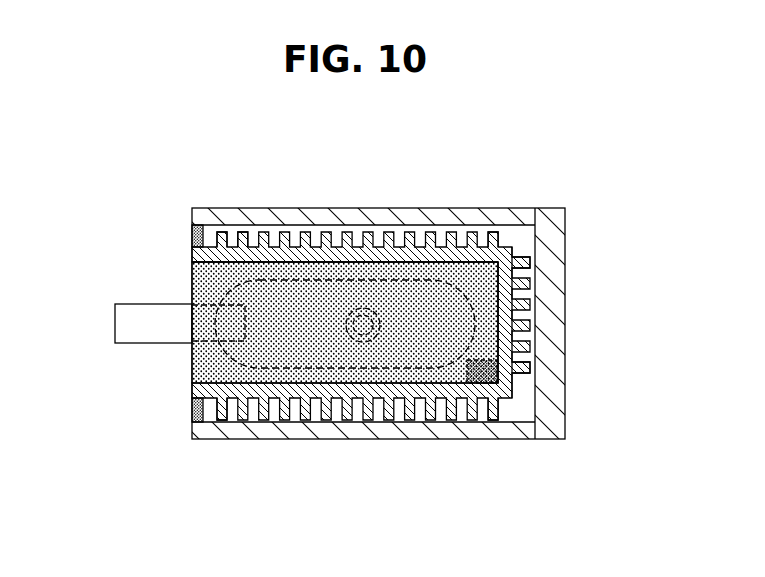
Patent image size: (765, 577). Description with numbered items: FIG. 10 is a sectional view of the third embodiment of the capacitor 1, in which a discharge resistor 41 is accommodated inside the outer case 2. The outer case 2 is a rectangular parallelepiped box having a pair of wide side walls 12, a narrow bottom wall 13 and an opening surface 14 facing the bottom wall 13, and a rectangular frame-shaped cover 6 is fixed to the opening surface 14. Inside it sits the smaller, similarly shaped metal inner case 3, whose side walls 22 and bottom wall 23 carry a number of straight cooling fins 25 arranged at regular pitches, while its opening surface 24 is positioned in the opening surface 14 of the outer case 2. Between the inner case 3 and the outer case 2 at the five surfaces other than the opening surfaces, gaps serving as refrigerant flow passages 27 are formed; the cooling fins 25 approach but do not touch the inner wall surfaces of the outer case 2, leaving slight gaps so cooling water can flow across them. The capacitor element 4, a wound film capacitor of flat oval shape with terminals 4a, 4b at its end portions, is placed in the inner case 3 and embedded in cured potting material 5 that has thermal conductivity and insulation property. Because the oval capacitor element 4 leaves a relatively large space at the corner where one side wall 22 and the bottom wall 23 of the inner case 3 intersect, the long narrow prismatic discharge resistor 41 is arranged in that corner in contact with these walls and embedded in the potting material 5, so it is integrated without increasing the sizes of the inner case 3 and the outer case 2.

The capacitor 1 is at (542, 190).
The outer case 2 is at (470, 204).
The inner case 3 is at (521, 241).
The capacitor element 4 is at (280, 280).
The terminal 4a is at (137, 353).
The terminal 4b is at (138, 327).
The potting material 5 is at (197, 366).
The cover 6 is at (192, 233).
The side wall 12 is at (360, 218).
The bottom wall 13 is at (557, 318).
The opening surface 14 is at (192, 410).
The side wall 22 is at (315, 246).
The bottom wall 23 is at (513, 330).
The opening surface 24 is at (192, 276).
The cooling fins 25 is at (410, 236).
The refrigerant flow passages 27 is at (235, 236).
The discharge resistor 41 is at (467, 380).